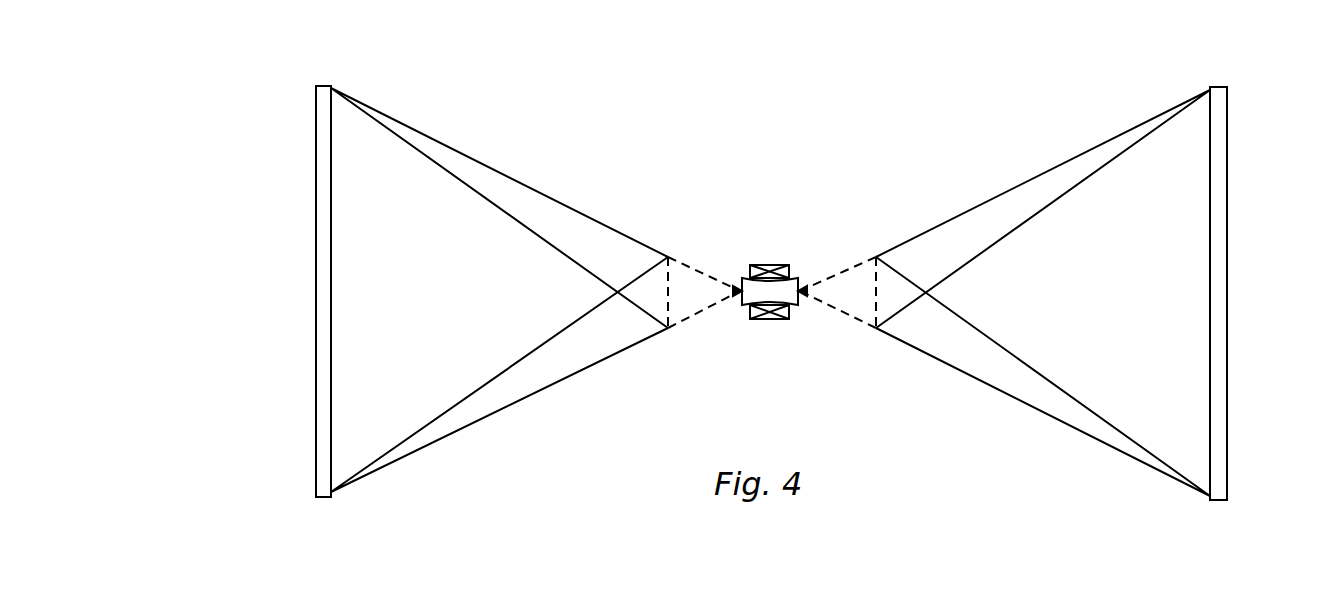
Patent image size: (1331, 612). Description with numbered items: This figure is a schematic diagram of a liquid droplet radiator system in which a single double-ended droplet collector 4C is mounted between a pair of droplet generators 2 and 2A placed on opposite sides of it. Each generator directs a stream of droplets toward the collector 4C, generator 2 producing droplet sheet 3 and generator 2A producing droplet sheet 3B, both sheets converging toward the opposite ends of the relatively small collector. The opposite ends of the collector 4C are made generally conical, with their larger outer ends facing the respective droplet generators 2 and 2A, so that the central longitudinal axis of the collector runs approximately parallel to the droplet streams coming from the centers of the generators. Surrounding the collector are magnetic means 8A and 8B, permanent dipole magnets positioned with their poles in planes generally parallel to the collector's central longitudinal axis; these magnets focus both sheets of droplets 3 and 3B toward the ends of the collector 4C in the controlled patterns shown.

The droplet generator 2 is at (315, 314).
The droplet generator 2A is at (1228, 267).
The droplet sheet 3 is at (463, 228).
The droplet sheet 3B is at (1110, 205).
The double-ended droplet collector 4C is at (740, 302).
The magnetic means 8A is at (763, 265).
The magnetic means 8B is at (780, 319).